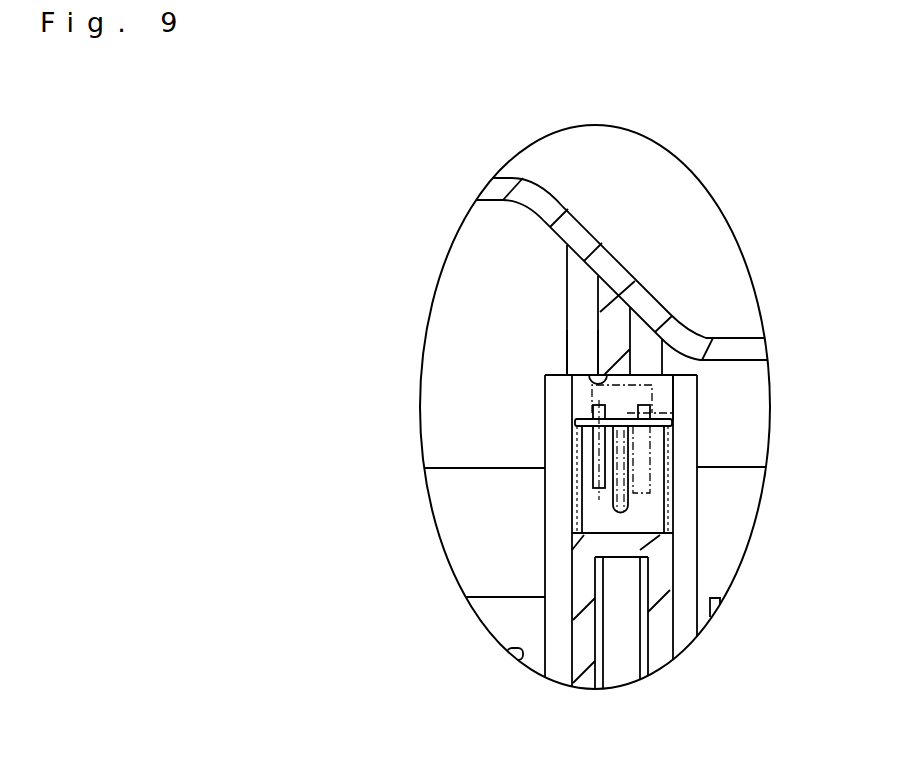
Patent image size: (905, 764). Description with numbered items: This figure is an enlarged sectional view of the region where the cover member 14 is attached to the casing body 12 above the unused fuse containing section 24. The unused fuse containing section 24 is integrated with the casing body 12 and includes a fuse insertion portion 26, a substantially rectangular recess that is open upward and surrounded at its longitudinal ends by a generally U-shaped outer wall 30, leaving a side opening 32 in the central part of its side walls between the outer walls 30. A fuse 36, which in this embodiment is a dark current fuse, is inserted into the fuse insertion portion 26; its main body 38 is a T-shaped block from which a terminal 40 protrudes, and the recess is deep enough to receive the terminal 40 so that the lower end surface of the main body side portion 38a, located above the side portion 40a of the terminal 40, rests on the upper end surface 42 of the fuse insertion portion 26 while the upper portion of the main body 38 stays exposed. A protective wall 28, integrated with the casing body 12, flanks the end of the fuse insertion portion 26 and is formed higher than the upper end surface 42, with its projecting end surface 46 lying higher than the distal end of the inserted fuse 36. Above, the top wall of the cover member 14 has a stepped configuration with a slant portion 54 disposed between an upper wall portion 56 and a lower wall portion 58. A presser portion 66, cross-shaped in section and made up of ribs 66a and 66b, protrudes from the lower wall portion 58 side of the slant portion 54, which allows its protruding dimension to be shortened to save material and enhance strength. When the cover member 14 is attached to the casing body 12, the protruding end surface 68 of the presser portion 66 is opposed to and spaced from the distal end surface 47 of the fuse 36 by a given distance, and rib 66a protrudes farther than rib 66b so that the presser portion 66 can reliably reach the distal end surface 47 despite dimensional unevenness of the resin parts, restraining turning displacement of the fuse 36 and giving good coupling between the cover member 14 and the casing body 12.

The casing body 12 is at (395, 484).
The cover member 14 is at (458, 197).
The unused fuse containing section 24 is at (560, 420).
The fuse insertion portion 26 is at (623, 510).
The protective wall 28 is at (557, 456).
The outer wall 30 is at (561, 563).
The side opening 32 is at (598, 512).
The fuse 36 is at (672, 393).
The main body 38 is at (738, 450).
The main body side portion 38a is at (600, 408).
The terminal 40 is at (746, 452).
The side portion of the terminal 40a is at (618, 474).
The upper end surface 42 is at (585, 420).
The projecting end surface 46 is at (557, 377).
The distal end surface 47 is at (645, 380).
The slant portion 54 is at (612, 262).
The upper wall portion 56 is at (492, 190).
The lower wall portion 58 is at (747, 338).
The presser portion 66 is at (466, 305).
The rib 66a is at (587, 310).
The rib 66b is at (613, 347).
The protruding end surface 68 is at (577, 363).